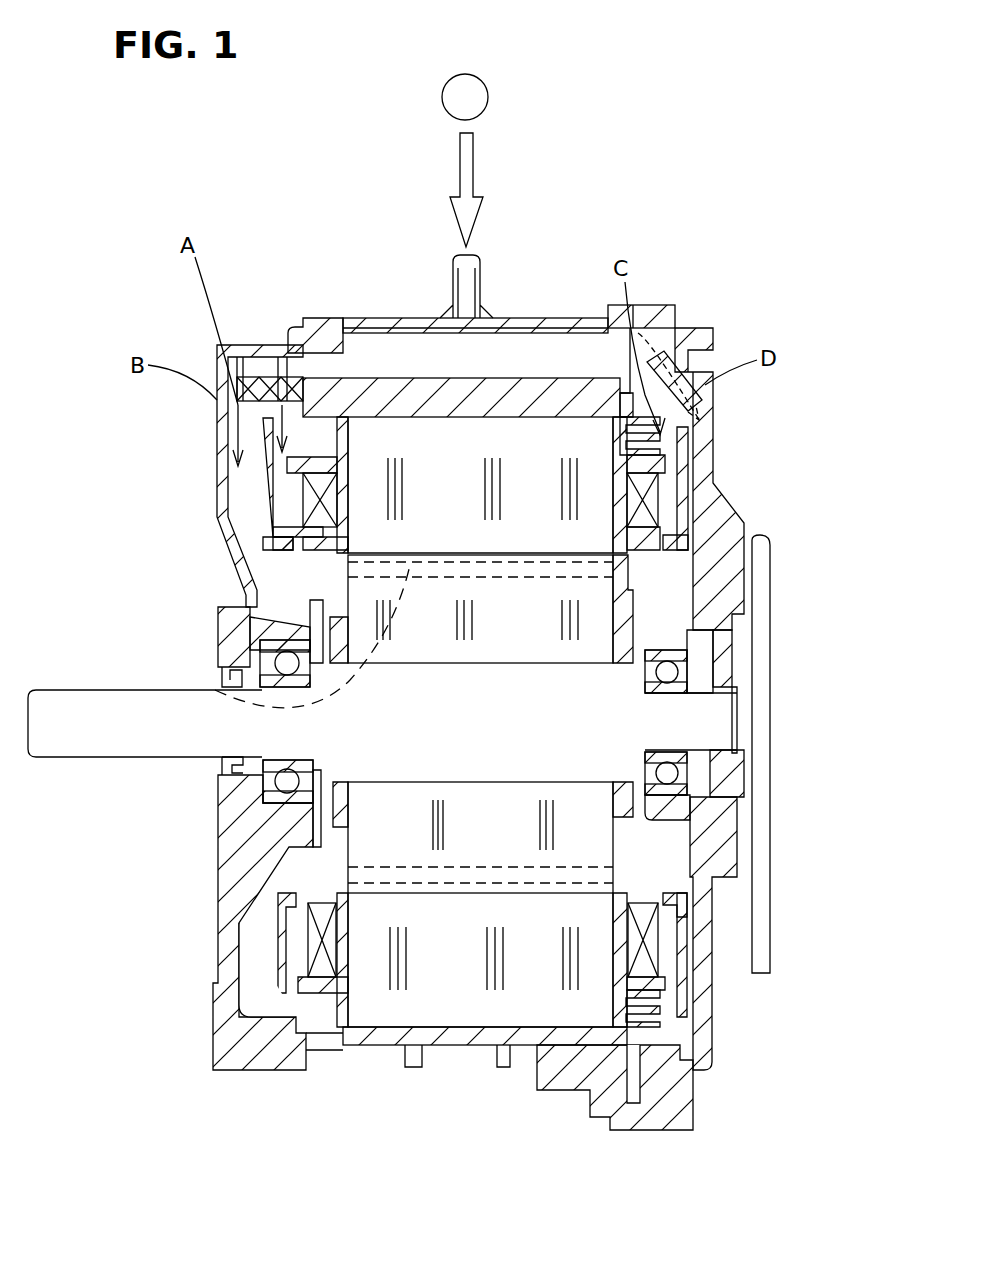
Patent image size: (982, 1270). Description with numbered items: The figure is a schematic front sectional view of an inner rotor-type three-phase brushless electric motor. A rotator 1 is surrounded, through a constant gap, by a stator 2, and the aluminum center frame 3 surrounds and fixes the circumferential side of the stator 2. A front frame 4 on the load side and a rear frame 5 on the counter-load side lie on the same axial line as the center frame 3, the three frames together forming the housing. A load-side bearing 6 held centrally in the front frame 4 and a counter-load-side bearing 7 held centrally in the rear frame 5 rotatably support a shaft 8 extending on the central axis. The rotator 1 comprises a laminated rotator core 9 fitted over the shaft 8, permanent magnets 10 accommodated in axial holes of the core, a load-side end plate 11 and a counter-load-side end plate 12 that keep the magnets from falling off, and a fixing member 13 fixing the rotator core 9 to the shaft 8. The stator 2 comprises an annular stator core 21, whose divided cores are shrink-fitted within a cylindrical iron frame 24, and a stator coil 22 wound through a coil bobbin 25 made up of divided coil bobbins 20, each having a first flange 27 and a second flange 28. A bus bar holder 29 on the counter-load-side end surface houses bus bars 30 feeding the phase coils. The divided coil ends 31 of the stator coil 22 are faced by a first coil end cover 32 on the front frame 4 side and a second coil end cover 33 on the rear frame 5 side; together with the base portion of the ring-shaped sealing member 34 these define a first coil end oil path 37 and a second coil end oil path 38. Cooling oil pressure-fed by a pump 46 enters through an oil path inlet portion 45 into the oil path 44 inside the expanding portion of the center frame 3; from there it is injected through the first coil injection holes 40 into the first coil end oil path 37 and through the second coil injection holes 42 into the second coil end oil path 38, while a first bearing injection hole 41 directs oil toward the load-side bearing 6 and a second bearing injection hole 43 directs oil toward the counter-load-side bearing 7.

The rotator 1 is at (655, 605).
The stator 2 is at (545, 440).
The center frame 3 is at (540, 330).
The front frame 4 is at (215, 437).
The rear frame 5 is at (718, 405).
The load-side bearing 6 is at (225, 632).
The counter-load-side bearing 7 is at (690, 690).
The shaft 8 is at (75, 757).
The rotator core 9 is at (345, 865).
The permanent magnets 10 is at (215, 690).
The load-side end plate 11 is at (289, 850).
The counter-load-side end plate 12 is at (655, 865).
The fixing member 13 is at (255, 815).
The divided coil bobbins 20 is at (283, 405).
The stator core 21 is at (500, 1010).
The stator coil 22 is at (700, 488).
The frame 24 is at (450, 1040).
The coil bobbin 25 is at (330, 993).
The first flange 27 is at (680, 1000).
The second flange 28 is at (660, 930).
The bus bar holder 29 is at (645, 1040).
The bus bars 30 is at (665, 450).
The divided coil ends 31 is at (300, 500).
The first coil end cover 32 is at (280, 530).
The second coil end cover 33 is at (685, 915).
The sealing member 34 is at (280, 550).
The first coil end oil path 37 is at (295, 486).
The second coil end oil path 38 is at (685, 470).
The first coil injection holes 40 is at (240, 375).
The first bearing injection hole 41 is at (228, 345).
The second coil injection holes 42 is at (668, 375).
The second bearing injection hole 43 is at (690, 360).
The oil path 44 is at (400, 318).
The oil path inlet portion 45 is at (480, 300).
The pump 46 is at (488, 97).